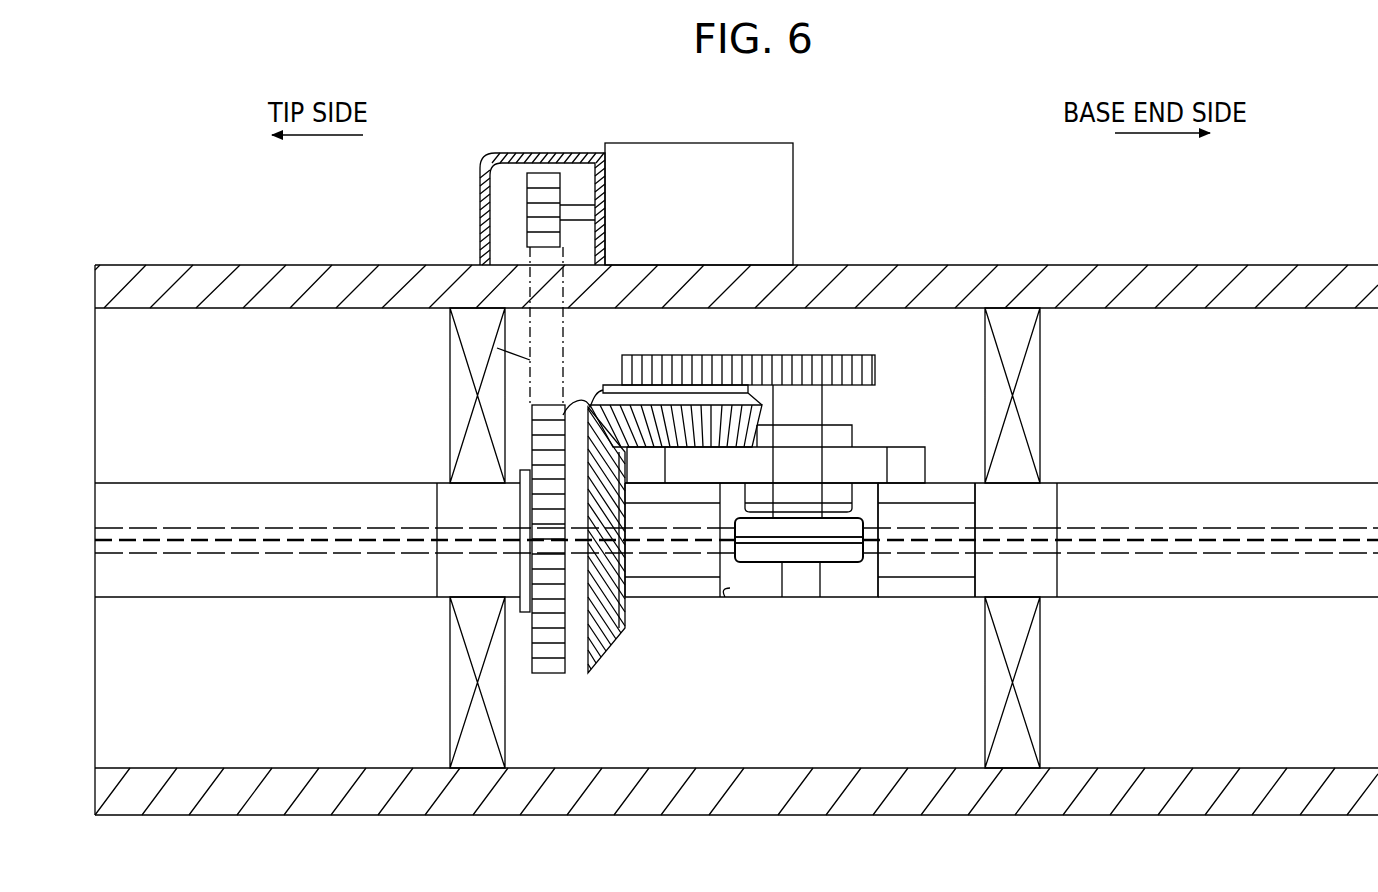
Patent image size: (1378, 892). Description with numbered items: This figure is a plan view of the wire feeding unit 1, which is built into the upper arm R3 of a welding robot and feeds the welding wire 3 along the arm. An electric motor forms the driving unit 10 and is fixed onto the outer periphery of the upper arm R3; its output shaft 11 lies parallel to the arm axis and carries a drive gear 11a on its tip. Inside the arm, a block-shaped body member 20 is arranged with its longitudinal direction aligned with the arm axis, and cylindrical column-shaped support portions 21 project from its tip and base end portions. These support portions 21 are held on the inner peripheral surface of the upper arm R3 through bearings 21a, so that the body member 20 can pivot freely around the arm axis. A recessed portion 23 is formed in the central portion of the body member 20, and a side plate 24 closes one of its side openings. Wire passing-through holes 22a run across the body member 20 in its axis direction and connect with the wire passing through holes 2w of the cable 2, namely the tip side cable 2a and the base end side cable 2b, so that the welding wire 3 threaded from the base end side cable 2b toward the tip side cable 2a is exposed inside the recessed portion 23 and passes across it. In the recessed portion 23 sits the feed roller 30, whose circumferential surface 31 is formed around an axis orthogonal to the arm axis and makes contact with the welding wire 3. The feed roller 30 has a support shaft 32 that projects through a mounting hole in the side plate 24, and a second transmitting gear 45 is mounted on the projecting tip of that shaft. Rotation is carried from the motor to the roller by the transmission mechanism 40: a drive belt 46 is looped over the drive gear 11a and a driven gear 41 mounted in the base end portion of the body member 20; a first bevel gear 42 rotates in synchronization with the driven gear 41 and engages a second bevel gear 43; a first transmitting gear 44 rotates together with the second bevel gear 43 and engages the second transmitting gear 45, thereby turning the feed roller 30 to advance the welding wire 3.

The wire feeding unit 1 is at (897, 331).
The upper arm R3 is at (1180, 276).
The cable 2 is at (736, 588).
The tip side cable 2a is at (320, 600).
The base end side cable 2b is at (1204, 601).
The wire passing through hole 2w is at (253, 528).
The welding wire 3 is at (847, 543).
The driving unit 10 is at (798, 182).
The output shaft 11 is at (579, 208).
The drive gear 11a is at (532, 193).
The body member 20 is at (958, 604).
The support portion 21 is at (447, 593).
The bearing 21a is at (456, 385).
The wire passing-through hole 22a is at (663, 547).
The recessed portion 23 is at (733, 590).
The side plate 24 is at (925, 455).
The feed roller 30 is at (767, 567).
The circumferential surface 31 is at (822, 553).
The support shaft 32 is at (815, 410).
The transmission mechanism 40 is at (610, 362).
The driven gear 41 is at (553, 673).
The first bevel gear 42 is at (584, 672).
The second bevel gear 43 is at (657, 412).
The first transmitting gear 44 is at (688, 365).
The second transmitting gear 45 is at (853, 355).
The drive belt 46 is at (497, 348).